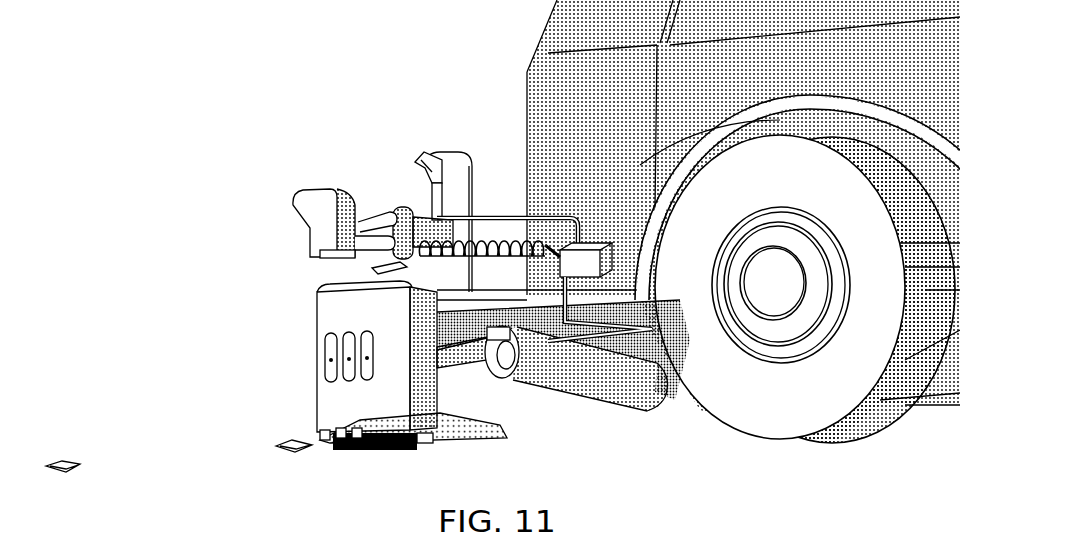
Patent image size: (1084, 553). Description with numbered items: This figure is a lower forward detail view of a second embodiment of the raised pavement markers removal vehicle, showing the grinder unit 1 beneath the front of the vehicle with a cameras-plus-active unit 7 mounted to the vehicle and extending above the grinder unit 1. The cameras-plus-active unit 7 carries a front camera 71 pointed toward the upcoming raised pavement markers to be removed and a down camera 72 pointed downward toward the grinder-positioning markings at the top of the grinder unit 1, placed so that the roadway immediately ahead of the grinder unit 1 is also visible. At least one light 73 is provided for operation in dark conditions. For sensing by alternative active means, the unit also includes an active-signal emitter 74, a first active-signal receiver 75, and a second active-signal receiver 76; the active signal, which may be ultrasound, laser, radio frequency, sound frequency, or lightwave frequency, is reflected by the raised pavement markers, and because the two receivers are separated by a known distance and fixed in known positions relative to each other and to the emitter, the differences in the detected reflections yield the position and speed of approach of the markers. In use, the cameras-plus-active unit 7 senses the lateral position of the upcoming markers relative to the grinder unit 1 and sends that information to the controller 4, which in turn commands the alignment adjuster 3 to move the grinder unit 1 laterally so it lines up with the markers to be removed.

The grinder unit 1 is at (272, 378).
The alignment adjuster 3 is at (573, 393).
The controller 4 is at (590, 250).
The cameras-plus-active unit 7 is at (326, 100).
The front camera 71 is at (290, 236).
The down camera 72 is at (330, 253).
The light 73 is at (388, 267).
The active-signal emitter 74 is at (358, 223).
The first active-signal receiver 75 is at (413, 163).
The second active-signal receiver 76 is at (284, 213).